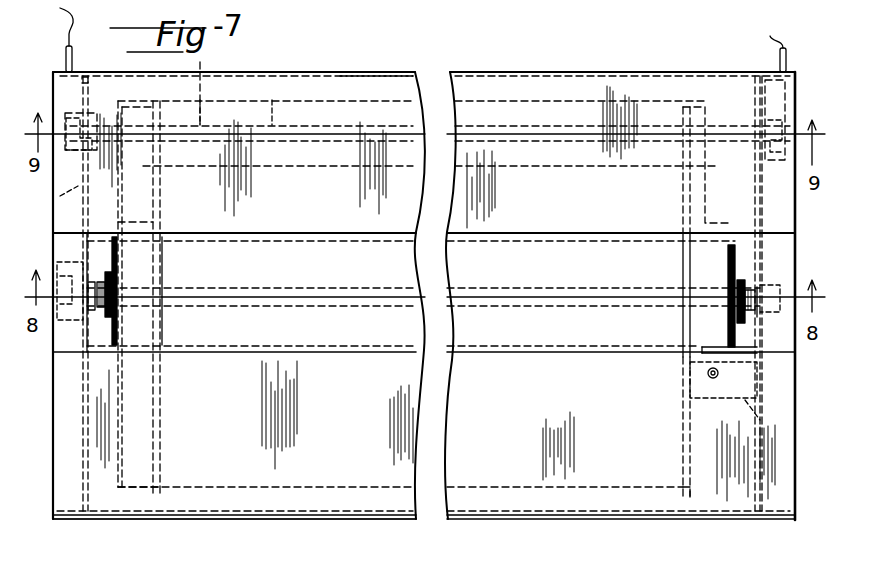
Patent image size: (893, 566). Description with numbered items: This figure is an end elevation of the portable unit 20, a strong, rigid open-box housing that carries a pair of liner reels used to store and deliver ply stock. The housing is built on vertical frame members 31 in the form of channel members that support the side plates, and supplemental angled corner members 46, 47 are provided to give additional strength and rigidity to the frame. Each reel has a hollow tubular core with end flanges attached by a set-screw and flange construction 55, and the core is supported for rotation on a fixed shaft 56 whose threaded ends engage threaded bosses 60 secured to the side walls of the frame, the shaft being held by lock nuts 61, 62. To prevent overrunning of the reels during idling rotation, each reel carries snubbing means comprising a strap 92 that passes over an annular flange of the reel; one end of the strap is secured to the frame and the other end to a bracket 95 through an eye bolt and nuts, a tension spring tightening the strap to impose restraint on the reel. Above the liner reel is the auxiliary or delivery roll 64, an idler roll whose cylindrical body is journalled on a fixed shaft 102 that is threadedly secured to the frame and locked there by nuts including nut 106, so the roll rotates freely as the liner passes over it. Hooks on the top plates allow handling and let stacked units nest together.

The portable unit 20 is at (553, 52).
The vertical frame member 31 is at (782, 268).
The angled corner member 46 is at (379, 55).
The angled corner member 47 is at (746, 505).
The set-screw and flange construction 55 is at (190, 565).
The fixed shaft 56 is at (84, 294).
The threaded boss 60 is at (787, 277).
The lock nut 61 is at (778, 312).
The lock nut 62 is at (82, 282).
The auxiliary roll 64 is at (272, 100).
The strap 92 is at (718, 332).
The bracket 95 is at (753, 412).
The fixed shaft 102 is at (202, 100).
The nut 106 is at (62, 206).